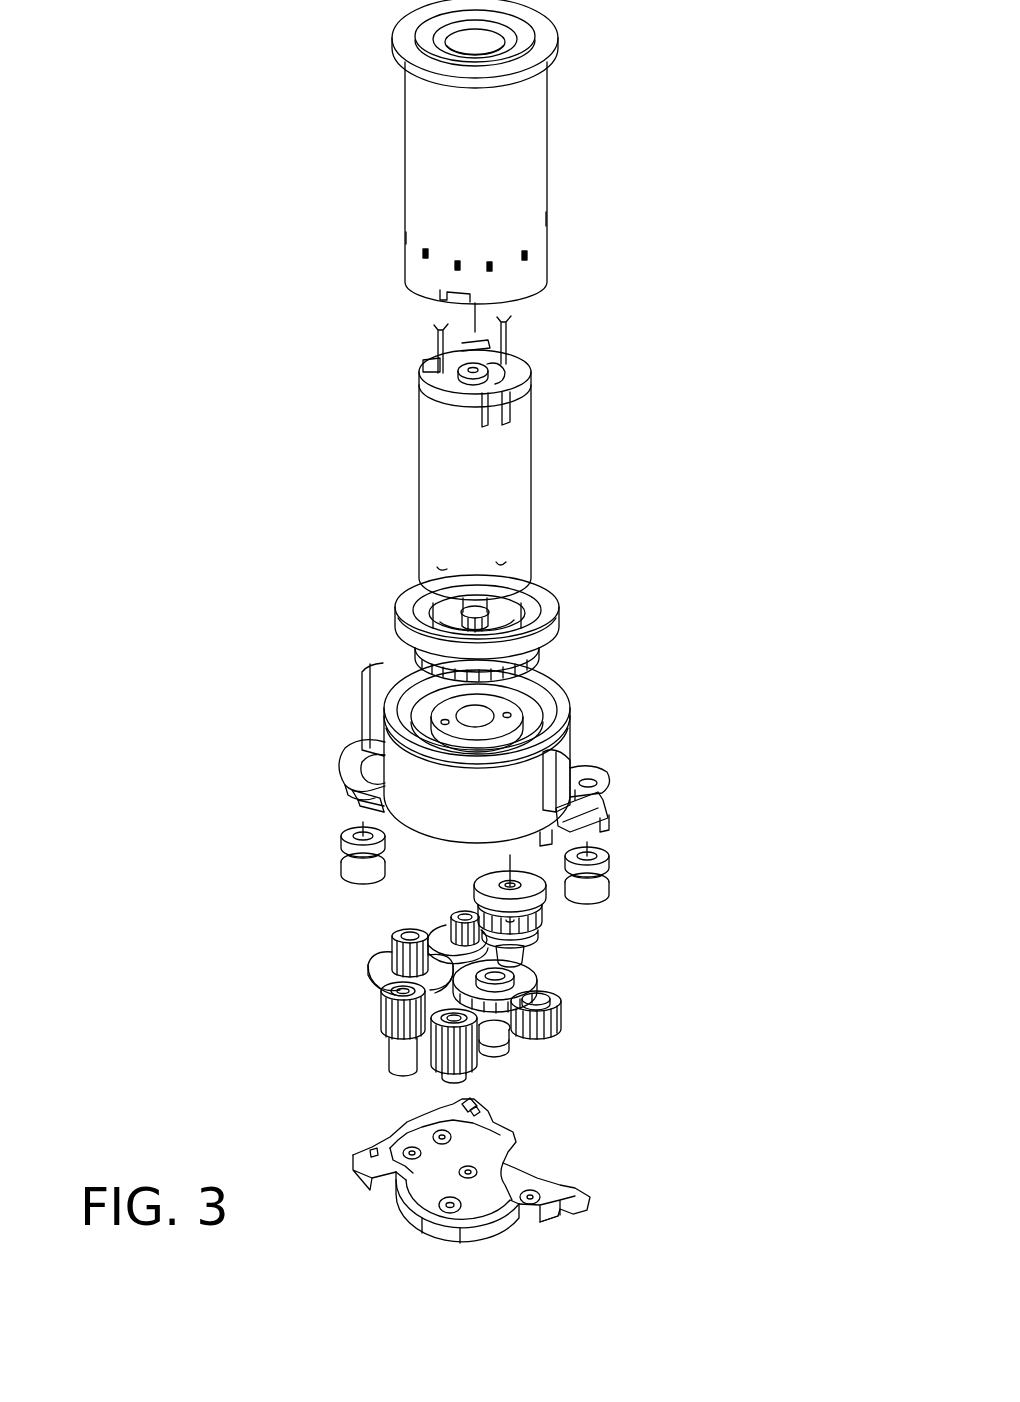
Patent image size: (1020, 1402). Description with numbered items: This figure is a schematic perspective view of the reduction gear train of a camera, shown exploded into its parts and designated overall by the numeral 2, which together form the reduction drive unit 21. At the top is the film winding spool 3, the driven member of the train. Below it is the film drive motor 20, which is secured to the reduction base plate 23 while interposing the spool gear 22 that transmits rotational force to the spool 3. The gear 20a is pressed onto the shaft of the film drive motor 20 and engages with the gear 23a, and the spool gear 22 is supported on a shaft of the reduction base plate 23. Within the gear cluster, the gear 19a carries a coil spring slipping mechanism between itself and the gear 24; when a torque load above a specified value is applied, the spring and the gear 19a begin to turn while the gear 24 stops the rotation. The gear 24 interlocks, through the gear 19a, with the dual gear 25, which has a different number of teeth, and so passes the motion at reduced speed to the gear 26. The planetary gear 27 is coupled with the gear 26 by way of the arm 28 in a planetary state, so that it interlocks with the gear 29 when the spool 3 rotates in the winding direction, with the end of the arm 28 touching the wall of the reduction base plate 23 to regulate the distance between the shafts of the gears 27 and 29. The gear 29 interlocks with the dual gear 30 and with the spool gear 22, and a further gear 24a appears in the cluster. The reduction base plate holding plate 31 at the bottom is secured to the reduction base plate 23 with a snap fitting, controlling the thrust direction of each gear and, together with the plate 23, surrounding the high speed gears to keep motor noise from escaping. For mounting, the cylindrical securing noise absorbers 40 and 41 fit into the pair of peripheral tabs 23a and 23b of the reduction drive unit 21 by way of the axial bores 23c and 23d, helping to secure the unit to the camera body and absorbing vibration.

The drive unit 2 is at (316, 276).
The film winding spool 3 is at (535, 140).
The film drive motor 20 is at (515, 453).
The gear 20a is at (408, 592).
The spool gear 22 is at (560, 595).
The reduction base plate 23 is at (570, 749).
The peripheral tab 23a is at (346, 748).
The peripheral tab 23b is at (594, 764).
The axial bore 23c is at (350, 788).
The axial bore 23d is at (606, 792).
The reduction drive unit 21 is at (683, 800).
The securing noise absorber 40 is at (340, 863).
The securing noise absorber 41 is at (610, 885).
The gear 19a is at (494, 886).
The gear 24 is at (535, 945).
The small gear 24a is at (440, 921).
The dual gear 25 is at (368, 972).
The gear 26 is at (530, 975).
The planetary gear 27 is at (565, 1020).
The arm 28 is at (523, 1040).
The gear 29 is at (465, 1080).
The dual gear 30 is at (395, 1065).
The reduction base plate holding plate 31 is at (572, 1218).